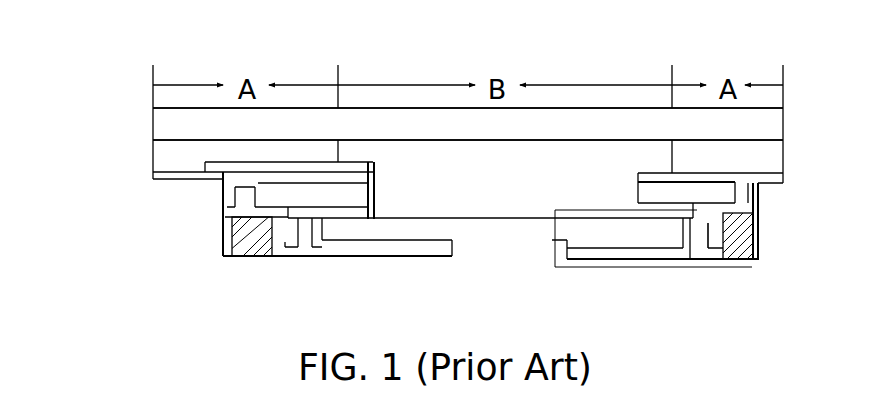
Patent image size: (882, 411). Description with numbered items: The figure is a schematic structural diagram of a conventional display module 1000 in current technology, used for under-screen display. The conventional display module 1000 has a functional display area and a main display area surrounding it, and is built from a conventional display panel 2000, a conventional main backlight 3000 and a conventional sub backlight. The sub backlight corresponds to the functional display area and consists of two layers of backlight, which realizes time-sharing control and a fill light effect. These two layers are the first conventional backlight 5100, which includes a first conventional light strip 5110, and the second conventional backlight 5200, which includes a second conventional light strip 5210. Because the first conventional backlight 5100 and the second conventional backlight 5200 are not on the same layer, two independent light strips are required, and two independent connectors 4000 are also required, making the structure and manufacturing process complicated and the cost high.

The conventional display module 1000 is at (97, 49).
The conventional display panel 2000 is at (153, 123).
The conventional main backlight 3000 is at (153, 157).
The connectors 4000 is at (748, 227).
The first conventional backlight 5100 is at (209, 200).
The first conventional light strip 5110 is at (246, 208).
The second conventional backlight 5200 is at (583, 267).
The second conventional light strip 5210 is at (701, 249).